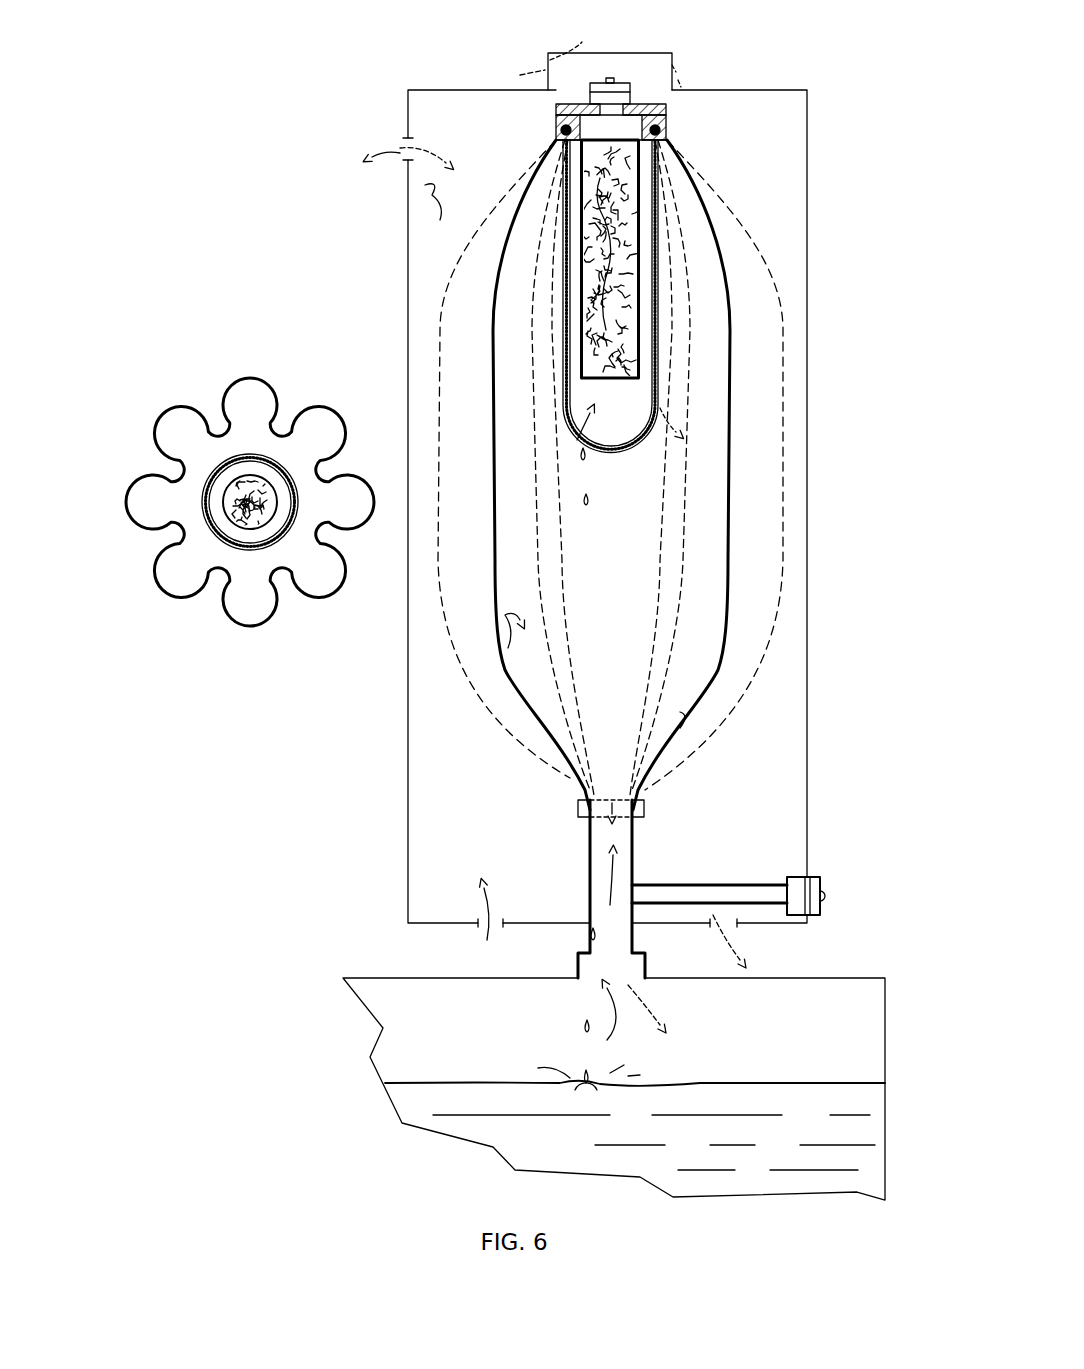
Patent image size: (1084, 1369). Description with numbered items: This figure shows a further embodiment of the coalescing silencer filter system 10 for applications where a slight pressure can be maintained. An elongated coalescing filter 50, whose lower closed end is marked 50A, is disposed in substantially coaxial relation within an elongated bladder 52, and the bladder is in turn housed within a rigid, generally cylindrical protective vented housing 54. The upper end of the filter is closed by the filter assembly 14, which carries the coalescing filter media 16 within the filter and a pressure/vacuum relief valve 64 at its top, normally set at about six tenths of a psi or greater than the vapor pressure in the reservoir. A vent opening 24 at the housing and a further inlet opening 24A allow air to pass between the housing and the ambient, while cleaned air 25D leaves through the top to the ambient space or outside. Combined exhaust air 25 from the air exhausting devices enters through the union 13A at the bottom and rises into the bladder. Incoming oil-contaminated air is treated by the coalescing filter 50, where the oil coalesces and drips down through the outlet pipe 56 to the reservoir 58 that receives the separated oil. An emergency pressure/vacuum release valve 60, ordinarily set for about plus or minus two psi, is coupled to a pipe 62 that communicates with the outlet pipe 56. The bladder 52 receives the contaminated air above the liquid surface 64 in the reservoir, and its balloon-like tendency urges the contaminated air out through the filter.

The coalescing silencer filter system 10 is at (389, 86).
The filter assembly 14 is at (668, 106).
The coalescing filter media 16 is at (640, 212).
The vent opening 24 is at (400, 153).
The air inlet opening 24A is at (478, 930).
The combined exhaust air 25 is at (607, 882).
The exhausted air 25D is at (706, 56).
The union 13A is at (632, 943).
The elongated coalescing filter 50 is at (660, 335).
The sheath closed end 50A is at (613, 423).
The elongated bladder 52 is at (732, 548).
The protective vented housing 54 is at (807, 390).
The outlet pipe 56 is at (578, 812).
The reservoir 58 is at (886, 1128).
The emergency pressure/vacuum release valve 60 is at (812, 877).
The pipe 62 is at (733, 885).
The pressure/vacuum relief valve 64 is at (805, 1083).